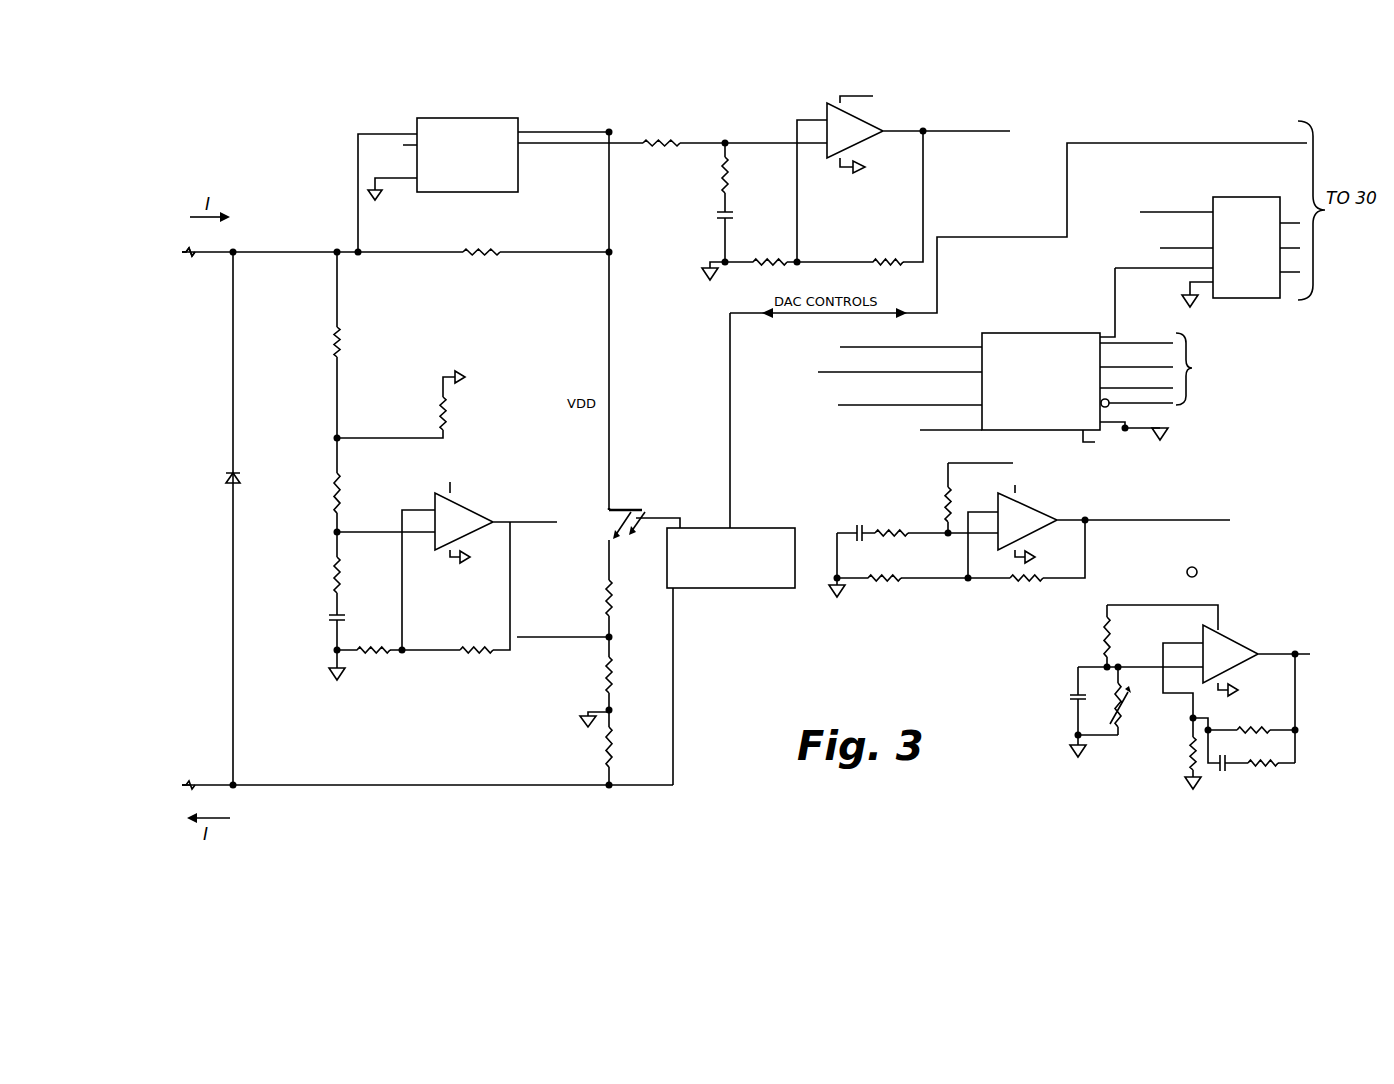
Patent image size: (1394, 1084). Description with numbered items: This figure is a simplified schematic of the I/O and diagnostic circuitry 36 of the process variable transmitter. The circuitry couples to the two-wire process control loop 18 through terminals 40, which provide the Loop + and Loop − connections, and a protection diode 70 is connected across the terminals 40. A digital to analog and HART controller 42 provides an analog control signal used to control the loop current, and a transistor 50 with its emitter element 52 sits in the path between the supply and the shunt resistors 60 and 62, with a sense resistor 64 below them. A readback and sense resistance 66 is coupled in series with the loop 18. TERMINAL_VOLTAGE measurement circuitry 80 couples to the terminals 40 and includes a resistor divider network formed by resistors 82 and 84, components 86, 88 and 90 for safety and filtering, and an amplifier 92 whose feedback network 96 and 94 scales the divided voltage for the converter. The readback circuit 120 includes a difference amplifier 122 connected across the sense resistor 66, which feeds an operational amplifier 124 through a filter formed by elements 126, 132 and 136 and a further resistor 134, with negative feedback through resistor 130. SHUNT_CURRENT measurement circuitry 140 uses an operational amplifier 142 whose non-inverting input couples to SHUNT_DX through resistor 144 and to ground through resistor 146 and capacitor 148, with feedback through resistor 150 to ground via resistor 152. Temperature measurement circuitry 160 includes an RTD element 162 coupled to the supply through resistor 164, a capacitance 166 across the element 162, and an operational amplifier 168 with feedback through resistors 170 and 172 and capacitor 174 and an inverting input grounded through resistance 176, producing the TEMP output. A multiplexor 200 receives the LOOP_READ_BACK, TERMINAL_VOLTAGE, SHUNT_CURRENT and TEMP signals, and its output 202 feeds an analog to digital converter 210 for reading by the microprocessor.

The two-wire process control loop 18 is at (229, 256).
The terminals 40 is at (205, 253).
The I/O and diagnostic circuitry 36 is at (1208, 131).
The HART controller 42 is at (733, 588).
The transistor 50 is at (641, 511).
The transistor emitter 52 is at (621, 542).
The resistor 60 is at (622, 603).
The resistor 62 is at (605, 680).
The sense resistor 64 is at (615, 752).
The readback and sense resistance 66 is at (487, 240).
The protection diode 70 is at (229, 477).
The TERMINAL_VOLTAGE measurement circuitry 80 is at (502, 410).
The resistor 82 is at (340, 334).
The resistor 84 is at (443, 404).
The component 86 is at (338, 482).
The component 88 is at (338, 572).
The component 90 is at (333, 618).
The amplifier 92 is at (462, 496).
The feedback network element 94 is at (366, 655).
The feedback network element 96 is at (480, 648).
The readback circuit 120 is at (628, 122).
The difference amplifier 122 is at (456, 118).
The operational amplifier 124 is at (868, 118).
The filter component 126 is at (658, 132).
The resistor 130 is at (880, 258).
The filter component 132 is at (722, 172).
The resistor 134 is at (760, 268).
The filter component 136 is at (718, 222).
The SHUNT_CURRENT measurement circuitry 140 is at (985, 603).
The operational amplifier 142 is at (1035, 506).
The resistor 144 is at (944, 500).
The resistor 146 is at (880, 534).
The capacitor 148 is at (862, 542).
The resistor 150 is at (1028, 580).
The resistor 152 is at (890, 580).
The temperature measurement circuitry 160 is at (1218, 582).
The RTD element 162 is at (1126, 698).
The resistor 164 is at (1101, 632).
The capacitance 166 is at (1069, 701).
The operational amplifier 168 is at (1228, 640).
The resistor 170 is at (1264, 720).
The resistor 172 is at (1258, 776).
The capacitor 174 is at (1223, 776).
The resistance 176 is at (1190, 758).
The multiplexor 200 is at (1065, 335).
The output 202 is at (1113, 297).
The analog to digital converter 210 is at (1246, 299).